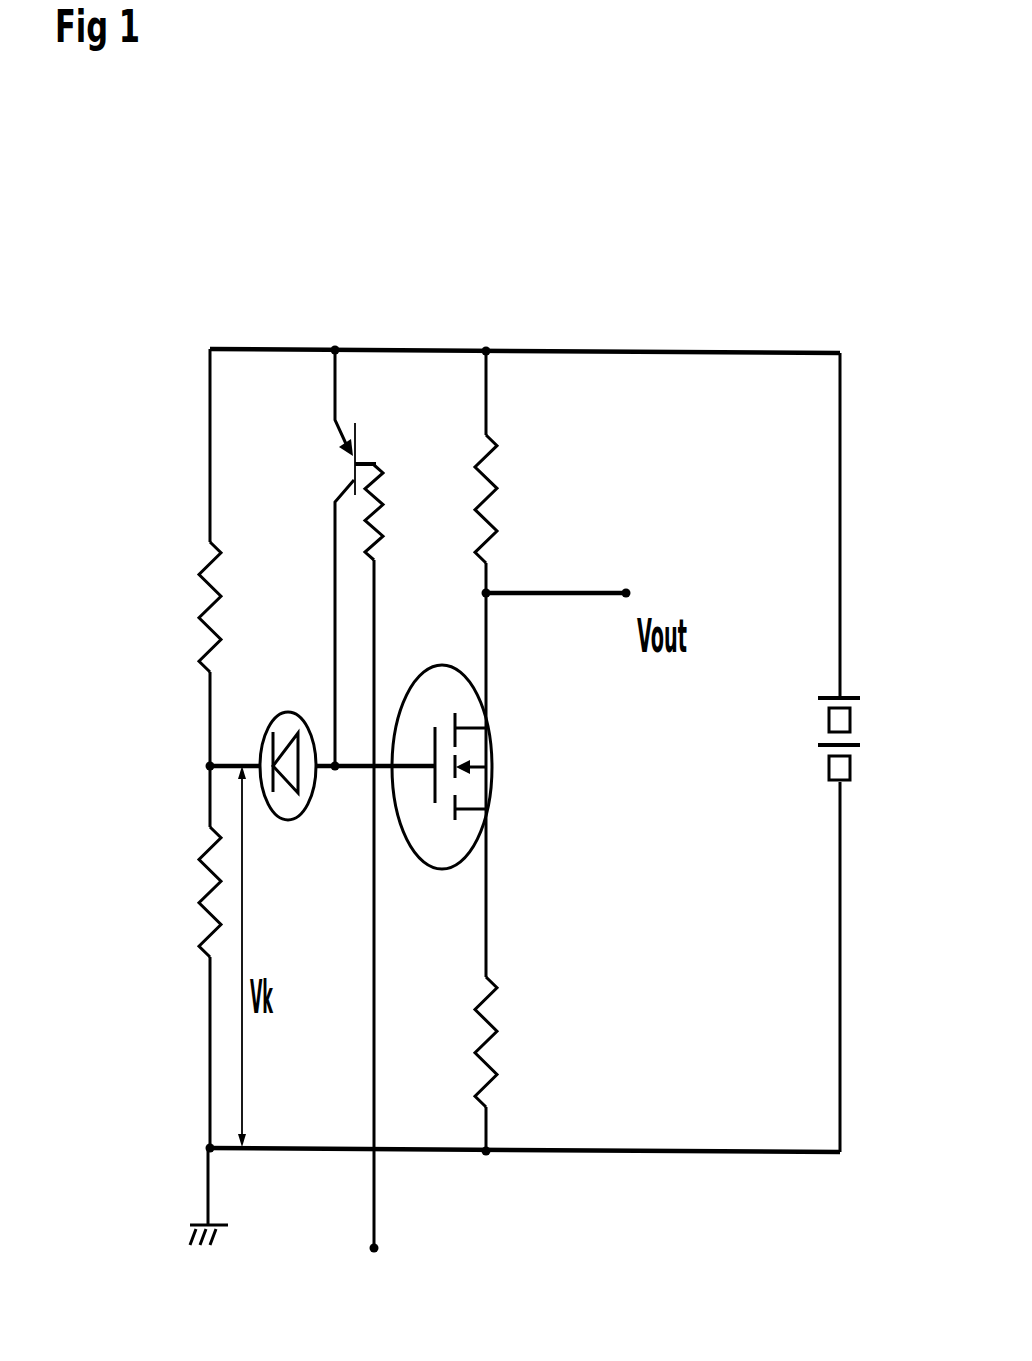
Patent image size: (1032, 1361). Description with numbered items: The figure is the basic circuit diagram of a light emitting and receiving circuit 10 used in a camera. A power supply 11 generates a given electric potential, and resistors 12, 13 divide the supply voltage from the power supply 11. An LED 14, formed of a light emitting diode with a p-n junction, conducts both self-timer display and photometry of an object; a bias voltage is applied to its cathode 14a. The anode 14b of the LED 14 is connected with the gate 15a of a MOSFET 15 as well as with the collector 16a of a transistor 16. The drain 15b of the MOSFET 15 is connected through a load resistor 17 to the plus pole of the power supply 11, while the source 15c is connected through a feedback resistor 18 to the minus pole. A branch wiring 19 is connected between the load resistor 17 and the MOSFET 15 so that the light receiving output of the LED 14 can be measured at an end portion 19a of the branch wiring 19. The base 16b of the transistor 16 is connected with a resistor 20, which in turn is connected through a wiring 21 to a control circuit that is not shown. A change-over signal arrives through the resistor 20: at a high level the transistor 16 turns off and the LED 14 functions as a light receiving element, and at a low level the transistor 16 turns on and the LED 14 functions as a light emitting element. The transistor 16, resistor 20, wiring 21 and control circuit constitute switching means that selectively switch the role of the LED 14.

The light emitting and receiving circuit 10 is at (514, 312).
The power supply 11 is at (855, 698).
The resistor 12 is at (202, 598).
The resistor 13 is at (200, 923).
The LED 14 is at (289, 712).
The cathode 14a is at (238, 763).
The anode 14b is at (319, 776).
The MOSFET 15 is at (446, 870).
The gate 15a is at (383, 735).
The drain 15b is at (496, 658).
The source 15c is at (492, 895).
The transistor 16 is at (366, 432).
The collector 16a is at (335, 520).
The base 16b is at (358, 465).
The load resistor 17 is at (495, 460).
The feedback resistor 18 is at (490, 1010).
The branch wiring 19 is at (565, 593).
The end portion 19a is at (627, 590).
The resistor 20 is at (382, 490).
The wiring 21 is at (377, 1100).